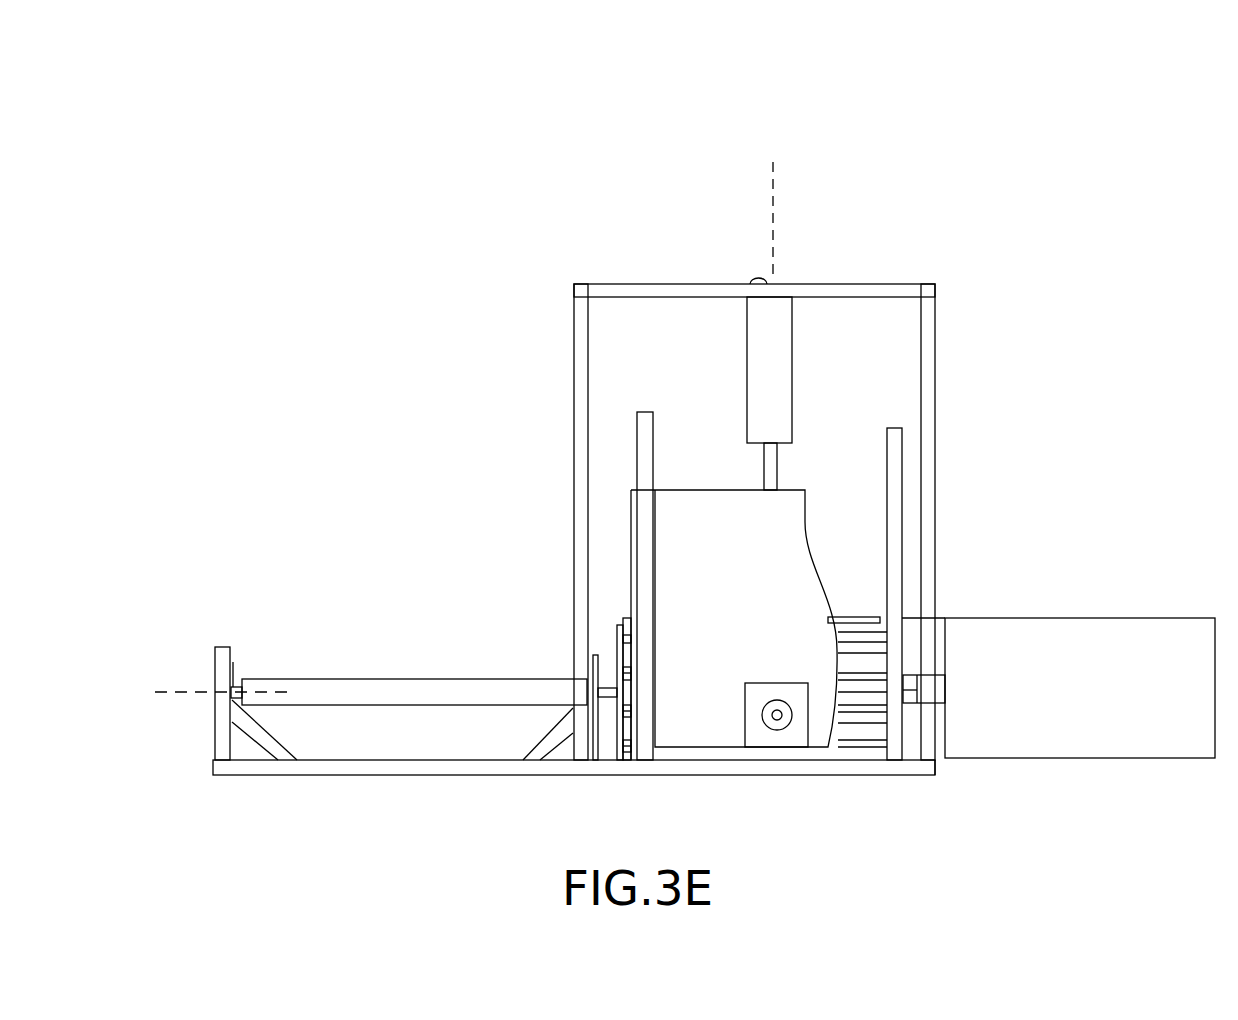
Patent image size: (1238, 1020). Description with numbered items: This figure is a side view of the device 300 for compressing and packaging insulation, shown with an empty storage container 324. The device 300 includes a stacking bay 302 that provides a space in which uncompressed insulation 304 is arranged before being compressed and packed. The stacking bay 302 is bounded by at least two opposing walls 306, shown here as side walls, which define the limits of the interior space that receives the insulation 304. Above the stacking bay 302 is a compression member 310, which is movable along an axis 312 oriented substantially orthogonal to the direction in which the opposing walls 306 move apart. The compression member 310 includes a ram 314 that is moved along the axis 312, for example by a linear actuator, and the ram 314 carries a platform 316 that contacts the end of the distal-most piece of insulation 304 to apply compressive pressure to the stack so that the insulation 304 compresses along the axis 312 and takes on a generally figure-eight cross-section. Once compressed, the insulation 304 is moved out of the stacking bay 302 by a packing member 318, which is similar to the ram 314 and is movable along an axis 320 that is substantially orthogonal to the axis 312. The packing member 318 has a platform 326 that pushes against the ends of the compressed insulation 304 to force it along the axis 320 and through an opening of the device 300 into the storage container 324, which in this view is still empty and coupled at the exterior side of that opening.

The device 300 is at (282, 136).
The stacking bay 302 is at (728, 458).
The uncompressed insulation 304 is at (872, 623).
The opposing walls 306 is at (668, 598).
The compression member 310 is at (739, 238).
The axis 312 is at (773, 183).
The ram 314 is at (792, 332).
The platform 316 is at (828, 614).
The packing member 318 is at (316, 678).
The axis 320 is at (180, 690).
The storage container 324 is at (980, 617).
The platform 326 is at (618, 722).